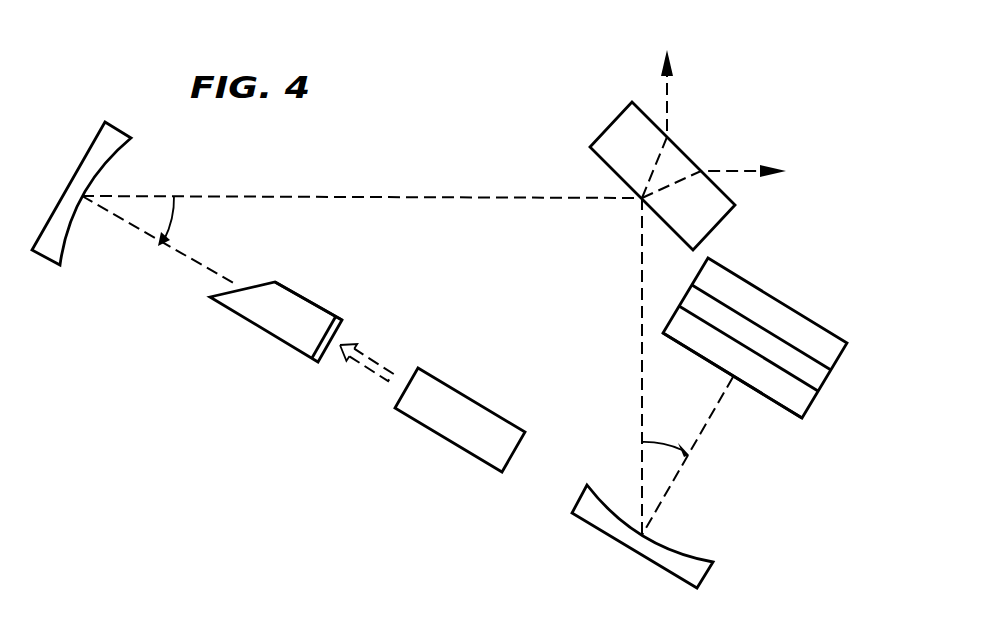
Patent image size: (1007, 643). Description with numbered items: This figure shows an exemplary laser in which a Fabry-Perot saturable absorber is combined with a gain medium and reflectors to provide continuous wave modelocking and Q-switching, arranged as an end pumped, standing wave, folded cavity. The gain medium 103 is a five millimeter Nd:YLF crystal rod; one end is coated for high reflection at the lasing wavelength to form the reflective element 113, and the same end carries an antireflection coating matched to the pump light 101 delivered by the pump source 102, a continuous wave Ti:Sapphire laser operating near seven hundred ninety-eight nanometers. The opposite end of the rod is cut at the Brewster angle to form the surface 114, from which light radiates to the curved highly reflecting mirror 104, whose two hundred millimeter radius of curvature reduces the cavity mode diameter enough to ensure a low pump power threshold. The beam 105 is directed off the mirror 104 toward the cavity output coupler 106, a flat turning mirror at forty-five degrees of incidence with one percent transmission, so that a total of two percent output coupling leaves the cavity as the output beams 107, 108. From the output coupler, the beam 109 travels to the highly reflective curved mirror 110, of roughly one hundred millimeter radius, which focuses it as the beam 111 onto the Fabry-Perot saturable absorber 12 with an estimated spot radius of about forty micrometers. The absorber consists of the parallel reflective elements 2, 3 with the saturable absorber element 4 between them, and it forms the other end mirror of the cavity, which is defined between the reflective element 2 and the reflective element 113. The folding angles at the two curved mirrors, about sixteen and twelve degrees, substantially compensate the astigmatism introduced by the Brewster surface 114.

The reflective element 2 is at (736, 396).
The reflective element 3 is at (805, 323).
The saturable absorber element 4 is at (822, 384).
The Fabry-Perot saturable absorber 12 is at (781, 357).
The pump light 101 is at (370, 373).
The pump source 102 is at (472, 399).
The gain medium 103 is at (277, 334).
The curved highly reflecting mirror 104 is at (112, 132).
The beam 105 is at (453, 195).
The cavity output coupler 106 is at (610, 122).
The output beam 107 is at (667, 92).
The output beam 108 is at (740, 168).
The beam 109 is at (640, 290).
The highly reflective curved mirror 110 is at (590, 530).
The beam 111 is at (668, 490).
The reflective element 113 is at (347, 321).
The Brewster angle surface 114 is at (273, 283).